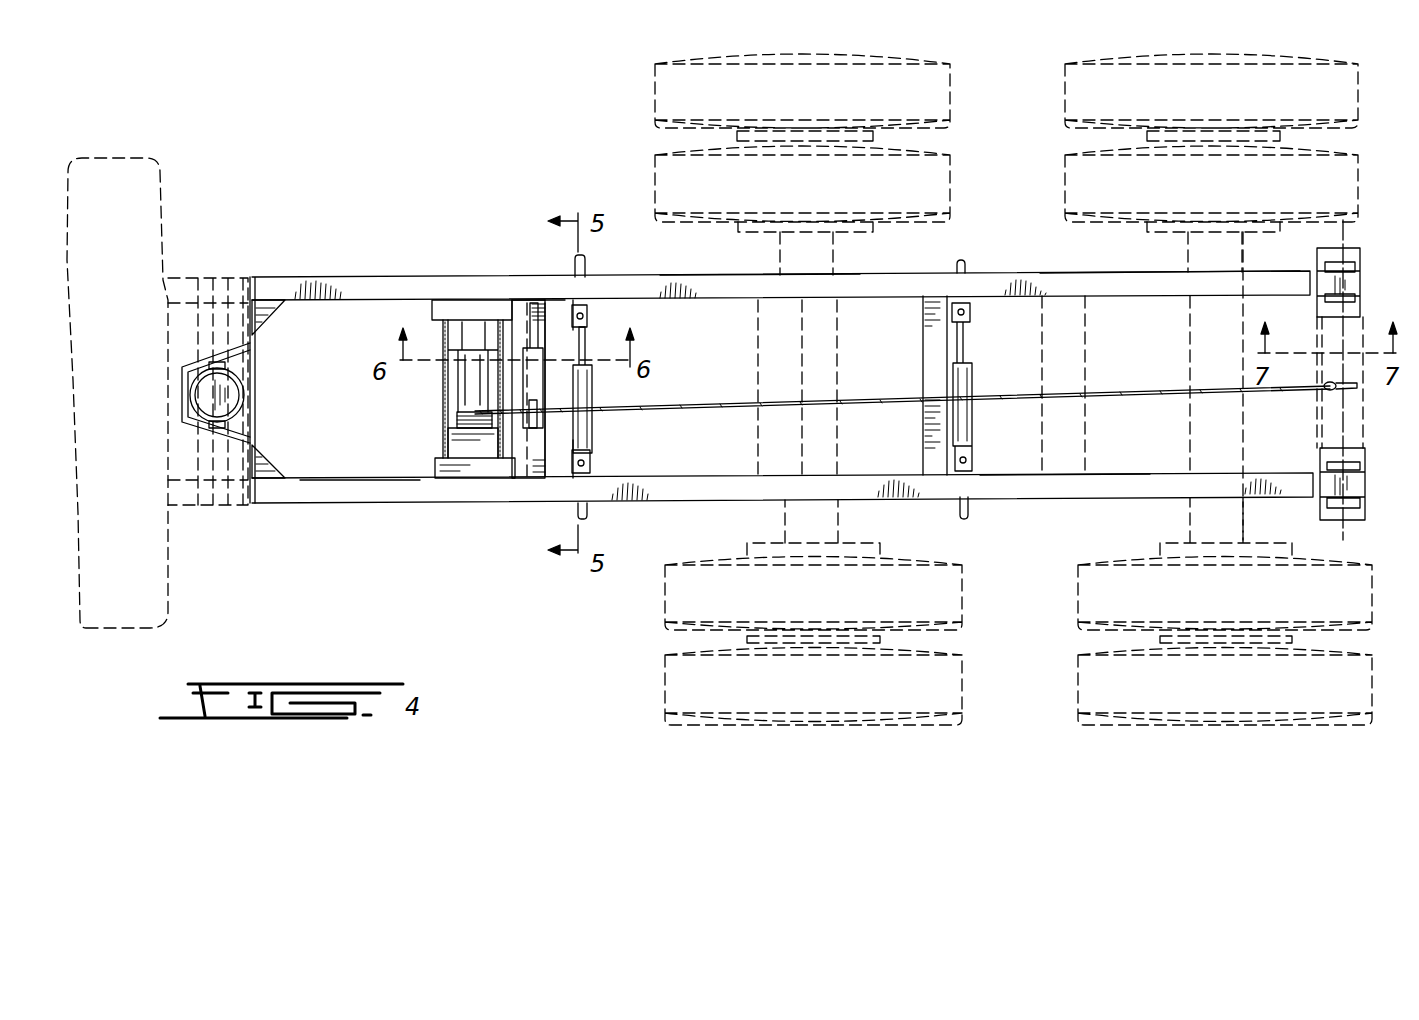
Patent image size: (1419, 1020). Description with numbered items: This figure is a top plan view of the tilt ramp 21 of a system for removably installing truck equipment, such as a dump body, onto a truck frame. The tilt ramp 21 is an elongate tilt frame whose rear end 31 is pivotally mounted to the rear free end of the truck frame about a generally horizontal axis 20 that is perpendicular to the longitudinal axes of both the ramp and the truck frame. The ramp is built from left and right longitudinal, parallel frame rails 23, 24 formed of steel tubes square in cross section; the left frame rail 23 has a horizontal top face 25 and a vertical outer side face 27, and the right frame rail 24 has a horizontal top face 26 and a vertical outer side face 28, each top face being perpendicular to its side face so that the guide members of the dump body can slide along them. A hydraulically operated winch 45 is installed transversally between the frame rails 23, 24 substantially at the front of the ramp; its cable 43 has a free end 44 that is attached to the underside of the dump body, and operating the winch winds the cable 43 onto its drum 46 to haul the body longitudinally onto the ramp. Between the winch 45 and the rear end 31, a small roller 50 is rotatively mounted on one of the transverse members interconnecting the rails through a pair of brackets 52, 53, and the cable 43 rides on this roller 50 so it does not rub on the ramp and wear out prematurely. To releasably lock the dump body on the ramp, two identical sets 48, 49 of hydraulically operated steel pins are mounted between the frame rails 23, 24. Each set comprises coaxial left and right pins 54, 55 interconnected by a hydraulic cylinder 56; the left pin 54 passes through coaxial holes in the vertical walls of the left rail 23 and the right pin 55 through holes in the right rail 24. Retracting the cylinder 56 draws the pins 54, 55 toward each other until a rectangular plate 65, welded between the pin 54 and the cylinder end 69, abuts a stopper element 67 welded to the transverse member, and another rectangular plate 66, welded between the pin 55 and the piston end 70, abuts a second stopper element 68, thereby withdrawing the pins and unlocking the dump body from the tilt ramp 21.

The horizontal axis 20 is at (1345, 235).
The tilt ramp 21 is at (405, 268).
The left frame rail 23 is at (412, 506).
The right frame rail 24 is at (730, 272).
The top face of left frame rail 25 is at (340, 503).
The top face of right frame rail 26 is at (1110, 278).
The outer side face of left frame rail 27 is at (1060, 500).
The outer side face of right frame rail 28 is at (1015, 292).
The rear end of tilt ramp 31 is at (1360, 305).
The cable 43 is at (1163, 382).
The free end of cable 44 is at (1340, 390).
The hydraulically operated winch 45 is at (447, 443).
The drum 46 is at (460, 396).
The set of hydraulically operated steel pins 48 is at (598, 380).
The set of hydraulically operated steel pins 49 is at (978, 378).
The roller 50 is at (560, 420).
The bracket 52 is at (515, 262).
The bracket 53 is at (528, 298).
The left pin 54 is at (588, 512).
The right pin 55 is at (586, 262).
The hydraulic cylinder 56 is at (585, 396).
The rectangular plate 65 is at (593, 470).
The rectangular plate 66 is at (592, 302).
The stopper element 67 is at (548, 262).
The stopper element 68 is at (548, 262).
The cylinder end 69 is at (592, 453).
The piston end 70 is at (592, 318).